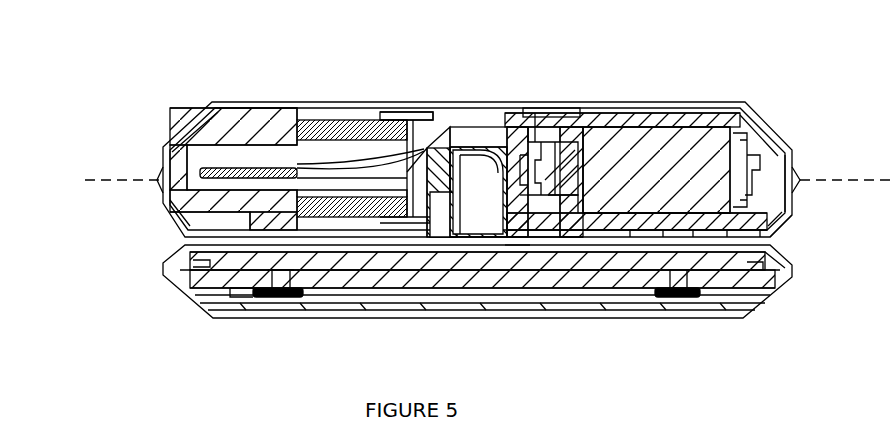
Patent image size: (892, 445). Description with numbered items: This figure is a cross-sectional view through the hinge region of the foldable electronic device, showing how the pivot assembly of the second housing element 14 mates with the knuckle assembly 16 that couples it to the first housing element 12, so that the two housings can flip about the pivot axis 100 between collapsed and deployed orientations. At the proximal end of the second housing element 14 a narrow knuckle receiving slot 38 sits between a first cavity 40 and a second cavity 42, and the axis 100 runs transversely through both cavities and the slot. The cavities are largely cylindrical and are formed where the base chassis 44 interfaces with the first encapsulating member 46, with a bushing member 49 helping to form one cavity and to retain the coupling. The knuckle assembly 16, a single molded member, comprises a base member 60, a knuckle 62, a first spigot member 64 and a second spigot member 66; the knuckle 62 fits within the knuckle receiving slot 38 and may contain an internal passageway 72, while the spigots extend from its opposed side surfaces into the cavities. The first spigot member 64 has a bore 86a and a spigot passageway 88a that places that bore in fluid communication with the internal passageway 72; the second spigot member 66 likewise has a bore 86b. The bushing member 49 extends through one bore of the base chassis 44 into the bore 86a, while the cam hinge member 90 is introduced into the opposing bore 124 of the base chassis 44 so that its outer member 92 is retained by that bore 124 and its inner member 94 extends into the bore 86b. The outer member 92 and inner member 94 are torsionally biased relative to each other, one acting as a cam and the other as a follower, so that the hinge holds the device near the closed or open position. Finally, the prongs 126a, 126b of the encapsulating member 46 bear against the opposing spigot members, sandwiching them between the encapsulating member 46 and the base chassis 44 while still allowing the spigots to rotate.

The axis 100 is at (88, 172).
The second housing element 14 is at (150, 213).
The first housing element 12 is at (168, 308).
The first encapsulating member 46 is at (252, 115).
The bushing member 49 is at (336, 115).
The first cavity 40 is at (416, 144).
The first spigot member 64 is at (387, 115).
The prong 126a is at (417, 112).
The knuckle 62 is at (462, 103).
The knuckle receiving slot 38 is at (426, 248).
The internal passageway 72 is at (500, 115).
The inner member 94 is at (555, 130).
The second spigot member 66 is at (540, 125).
The prong 126b is at (577, 108).
The outer member 92 is at (626, 118).
The bore 124 is at (697, 118).
The cam hinge member 90 is at (723, 138).
The base chassis 44 is at (780, 230).
The base member 60 is at (231, 292).
The spigot passageway 88a is at (390, 177).
The bore 86a is at (394, 196).
The bore 86b is at (525, 200).
The knuckle assembly 16 is at (513, 272).
The second cavity 42 is at (553, 206).